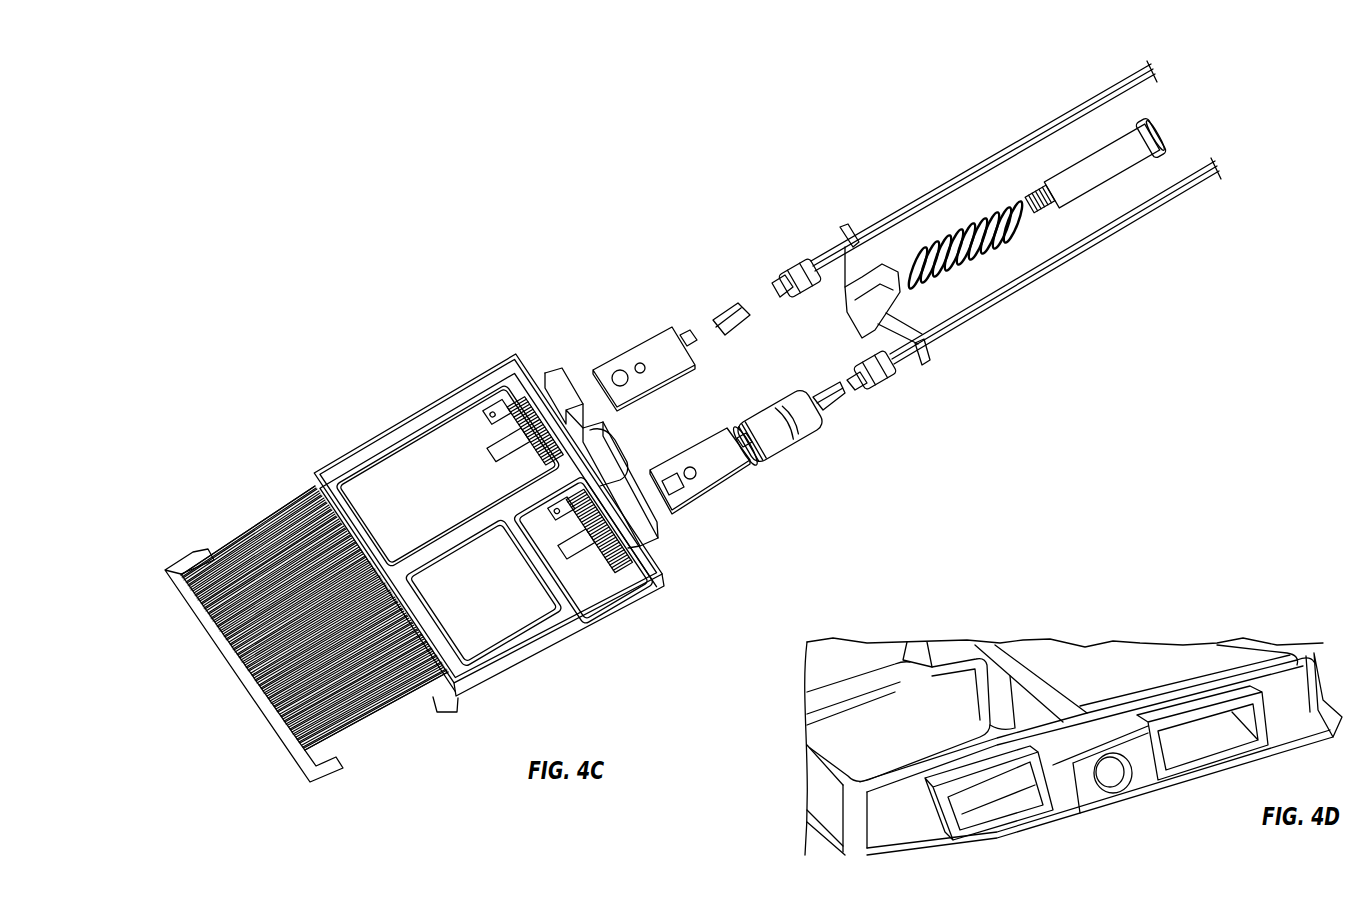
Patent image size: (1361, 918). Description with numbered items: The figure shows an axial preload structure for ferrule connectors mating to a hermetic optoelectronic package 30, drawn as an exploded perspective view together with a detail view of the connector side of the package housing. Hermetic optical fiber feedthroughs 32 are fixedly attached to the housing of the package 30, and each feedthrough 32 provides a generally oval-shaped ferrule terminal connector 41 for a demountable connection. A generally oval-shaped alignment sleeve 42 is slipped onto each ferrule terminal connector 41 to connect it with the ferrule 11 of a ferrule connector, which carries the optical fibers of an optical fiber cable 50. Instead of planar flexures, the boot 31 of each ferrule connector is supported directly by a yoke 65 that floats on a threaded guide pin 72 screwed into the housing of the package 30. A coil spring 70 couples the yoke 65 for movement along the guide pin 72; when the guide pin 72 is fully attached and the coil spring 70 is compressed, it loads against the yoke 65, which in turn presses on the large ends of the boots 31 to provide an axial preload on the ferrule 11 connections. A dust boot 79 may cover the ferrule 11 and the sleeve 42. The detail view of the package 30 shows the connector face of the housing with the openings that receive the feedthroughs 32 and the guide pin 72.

In FIG. 4C, the hermetic optoelectronic package 30 is at (552, 646).
In FIG. 4D, the hermetic optoelectronic package 30 is at (806, 703).
In FIG. 4C, the hermetic optical fiber feedthrough 32 is at (652, 350).
In FIG. 4C, the ferrule terminal connector 41 is at (688, 334).
In FIG. 4C, the alignment sleeve 42 is at (734, 321).
In FIG. 4C, the ferrule 11 is at (780, 282).
In FIG. 4C, the boot 31 is at (794, 263).
In FIG. 4C, the yoke 65 is at (856, 245).
In FIG. 4C, the optical fiber cable 50 is at (1010, 162).
In FIG. 4C, the coil spring 70 is at (968, 258).
In FIG. 4C, the threaded guide pin 72 is at (1092, 182).
In FIG. 4C, the dust boot 79 is at (800, 430).